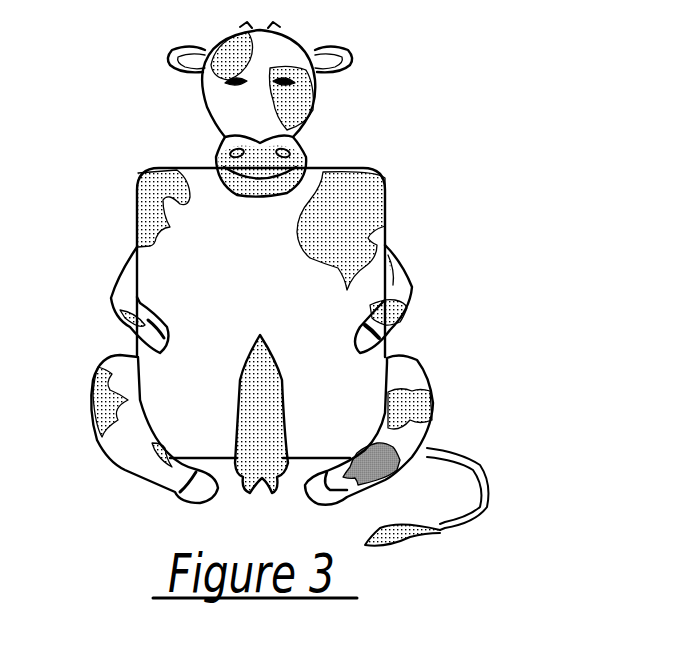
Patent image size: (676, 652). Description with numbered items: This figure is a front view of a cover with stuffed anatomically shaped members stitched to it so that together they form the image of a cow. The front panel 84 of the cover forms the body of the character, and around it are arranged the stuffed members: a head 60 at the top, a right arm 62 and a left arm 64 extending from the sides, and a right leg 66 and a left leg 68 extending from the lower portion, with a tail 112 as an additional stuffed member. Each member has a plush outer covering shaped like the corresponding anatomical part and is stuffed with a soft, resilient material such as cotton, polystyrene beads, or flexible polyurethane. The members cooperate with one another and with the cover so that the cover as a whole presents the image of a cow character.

The head 60 is at (288, 33).
The right arm 62 is at (118, 293).
The left arm 64 is at (400, 285).
The front panel 84 is at (373, 237).
The right leg 66 is at (123, 460).
The left leg 68 is at (415, 373).
The tail 112 is at (468, 455).